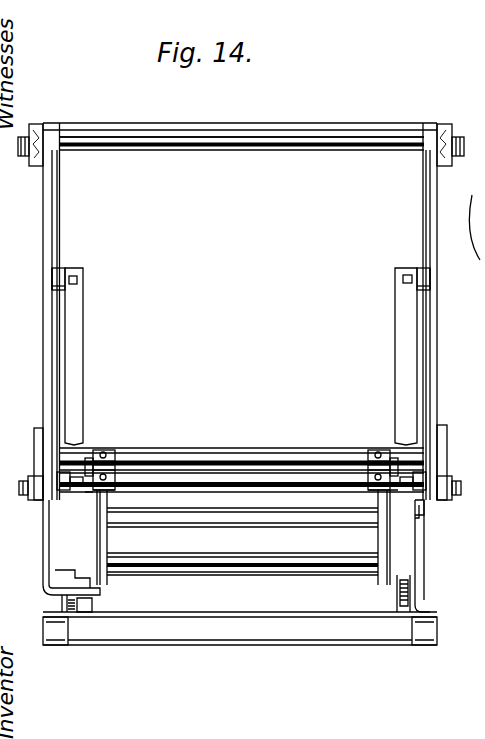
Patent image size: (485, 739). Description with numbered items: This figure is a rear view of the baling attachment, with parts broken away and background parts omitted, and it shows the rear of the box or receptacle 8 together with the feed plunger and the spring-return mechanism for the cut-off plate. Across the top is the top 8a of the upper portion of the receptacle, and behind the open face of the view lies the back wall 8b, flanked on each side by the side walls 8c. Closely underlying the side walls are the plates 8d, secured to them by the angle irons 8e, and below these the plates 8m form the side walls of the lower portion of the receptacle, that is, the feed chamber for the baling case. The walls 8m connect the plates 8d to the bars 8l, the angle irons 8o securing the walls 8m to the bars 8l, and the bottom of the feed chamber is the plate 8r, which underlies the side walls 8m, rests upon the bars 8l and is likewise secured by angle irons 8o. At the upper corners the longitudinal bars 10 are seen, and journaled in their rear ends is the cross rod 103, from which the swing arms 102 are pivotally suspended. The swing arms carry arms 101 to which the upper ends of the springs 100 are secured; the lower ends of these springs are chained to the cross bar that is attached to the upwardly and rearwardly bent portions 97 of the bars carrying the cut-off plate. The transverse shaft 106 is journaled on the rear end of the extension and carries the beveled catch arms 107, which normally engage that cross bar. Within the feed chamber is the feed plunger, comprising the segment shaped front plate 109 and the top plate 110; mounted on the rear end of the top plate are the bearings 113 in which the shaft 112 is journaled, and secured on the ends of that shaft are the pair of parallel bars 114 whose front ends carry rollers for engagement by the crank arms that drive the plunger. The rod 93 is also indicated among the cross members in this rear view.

The box or receptacle 8 is at (242, 213).
The top 8a is at (235, 130).
The back wall 8b is at (241, 303).
The side walls 8c is at (52, 278).
The plates 8d is at (426, 503).
The angle irons 8e is at (421, 514).
The bars 8l is at (437, 632).
The plates forming side walls of lower portion 8m is at (49, 573).
The angle irons 8o is at (437, 612).
The bottom plate 8r is at (259, 632).
The longitudinal bars 10 is at (37, 134).
The cross rod 93 is at (270, 470).
The upwardly and rearwardly bent portions 97 is at (37, 478).
The springs 100 is at (76, 322).
The arms 101 is at (62, 270).
The swing arms 102 is at (43, 222).
The cross rod 103 is at (177, 150).
The transverse shaft 106 is at (242, 465).
The beveled catch arms 107 is at (89, 470).
The segment shaped front plate 109 is at (242, 553).
The top plate 110 is at (242, 509).
The shaft 112 is at (195, 481).
The bearings 113 is at (62, 490).
The parallel bars 114 is at (36, 430).